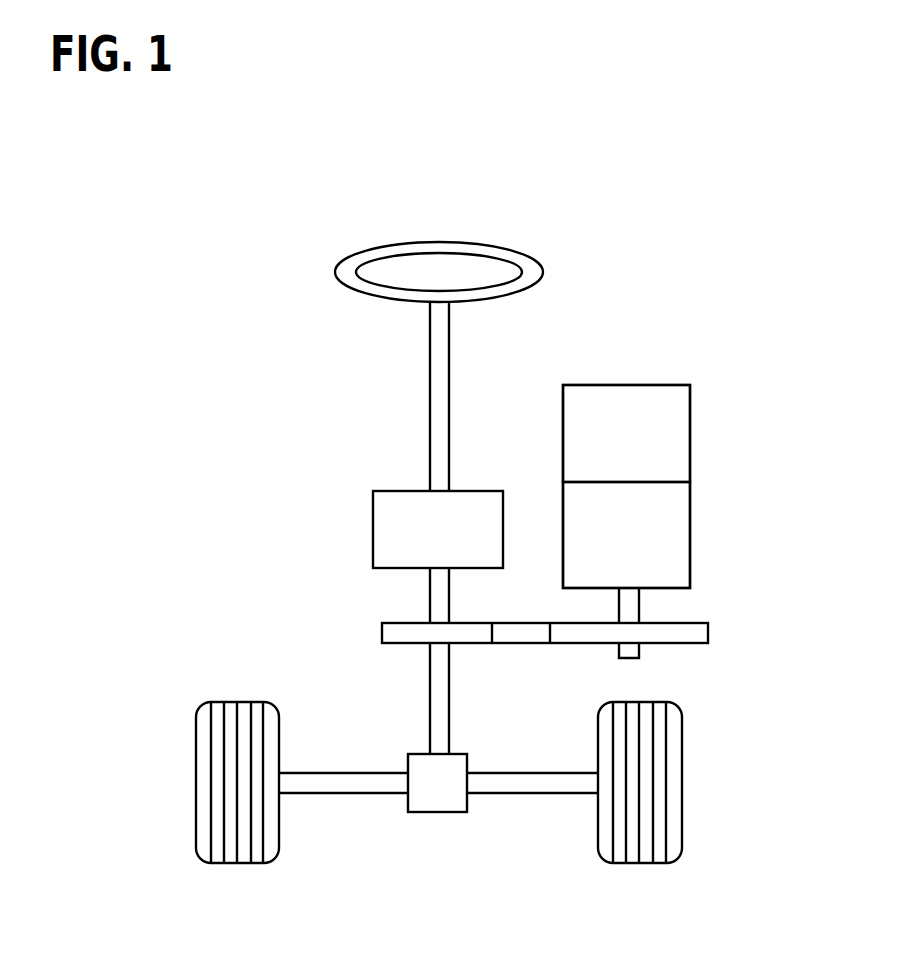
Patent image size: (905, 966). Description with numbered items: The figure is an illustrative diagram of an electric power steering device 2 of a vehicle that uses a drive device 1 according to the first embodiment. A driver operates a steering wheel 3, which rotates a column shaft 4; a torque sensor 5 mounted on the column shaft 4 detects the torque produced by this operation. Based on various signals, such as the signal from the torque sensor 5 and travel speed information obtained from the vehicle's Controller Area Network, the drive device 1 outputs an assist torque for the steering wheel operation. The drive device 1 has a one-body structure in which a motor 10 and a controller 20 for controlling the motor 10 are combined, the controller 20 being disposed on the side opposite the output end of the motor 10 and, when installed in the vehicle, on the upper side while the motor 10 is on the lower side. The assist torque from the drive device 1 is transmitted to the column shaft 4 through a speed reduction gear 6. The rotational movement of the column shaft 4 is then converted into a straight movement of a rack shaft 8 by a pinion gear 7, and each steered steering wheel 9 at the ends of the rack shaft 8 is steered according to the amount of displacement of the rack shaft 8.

The drive device 1 is at (691, 412).
The electric power steering device 2 is at (193, 328).
The steering wheel 3 is at (335, 274).
The column shaft 4 is at (429, 356).
The torque sensor 5 is at (373, 522).
The speed reduction gear 6 is at (708, 630).
The pinion gear 7 is at (432, 812).
The rack shaft 8 is at (340, 793).
The steering wheel 9 is at (254, 863).
The motor 10 is at (690, 510).
The controller 20 is at (690, 448).